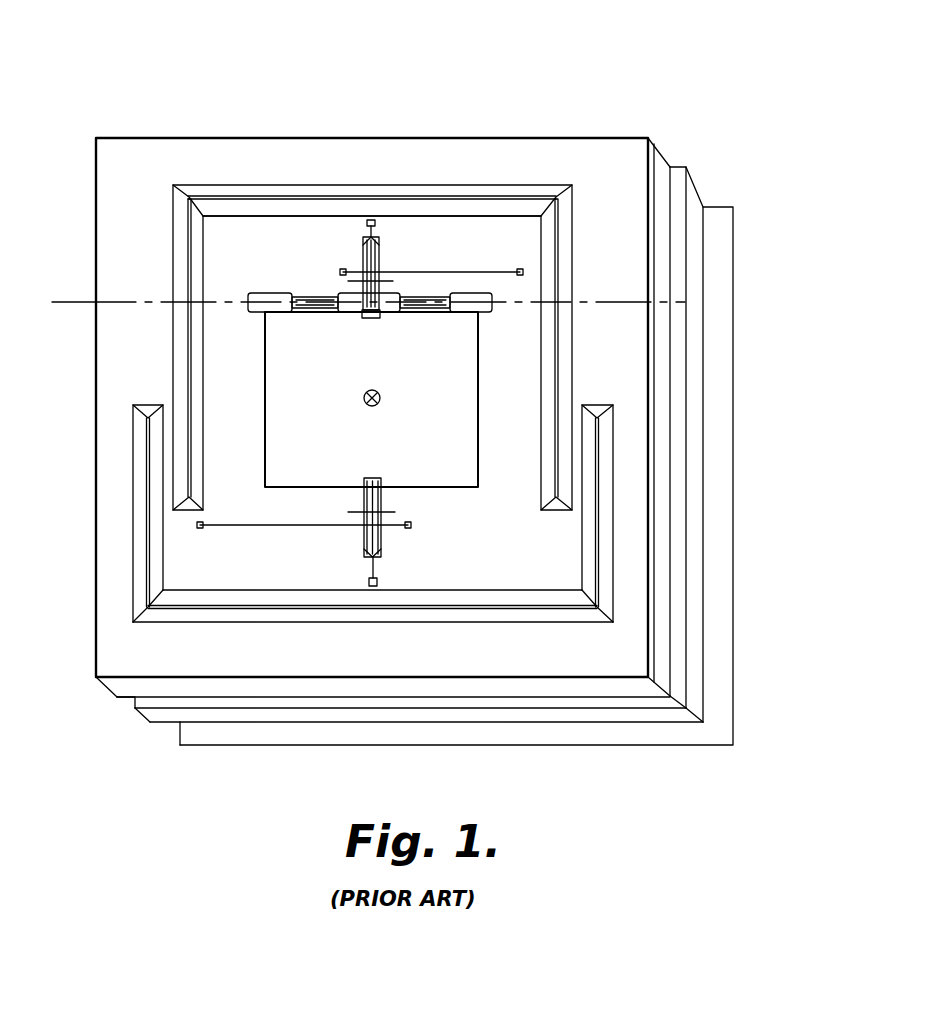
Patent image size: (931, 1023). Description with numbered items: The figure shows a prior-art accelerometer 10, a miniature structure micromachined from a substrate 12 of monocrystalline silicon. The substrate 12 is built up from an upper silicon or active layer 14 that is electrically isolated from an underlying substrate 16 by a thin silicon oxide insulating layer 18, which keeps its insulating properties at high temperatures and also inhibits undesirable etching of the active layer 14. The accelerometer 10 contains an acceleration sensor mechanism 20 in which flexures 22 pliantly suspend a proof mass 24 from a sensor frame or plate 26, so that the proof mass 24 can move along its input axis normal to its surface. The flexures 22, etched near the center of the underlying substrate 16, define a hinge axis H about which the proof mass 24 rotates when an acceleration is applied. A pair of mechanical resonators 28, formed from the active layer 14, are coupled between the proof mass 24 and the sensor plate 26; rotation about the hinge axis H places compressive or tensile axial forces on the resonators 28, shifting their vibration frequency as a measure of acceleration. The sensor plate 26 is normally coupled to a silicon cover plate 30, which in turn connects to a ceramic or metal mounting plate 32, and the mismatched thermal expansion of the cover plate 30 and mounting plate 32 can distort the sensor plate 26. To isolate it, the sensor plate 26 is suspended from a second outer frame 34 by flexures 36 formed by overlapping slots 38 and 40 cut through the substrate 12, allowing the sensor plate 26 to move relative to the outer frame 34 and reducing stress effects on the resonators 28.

The accelerometer 10 is at (645, 65).
The substrate 12 is at (548, 138).
The active layer 14 is at (648, 136).
The underlying substrate 16 is at (667, 150).
The insulating layer 18 is at (653, 136).
The acceleration sensor mechanism 20 is at (190, 563).
The flexures 22 is at (304, 293).
The proof mass 24 is at (253, 434).
The sensor plate 26 is at (437, 215).
The mechanical resonators 28 is at (350, 249).
The silicon cover plate 30 is at (697, 173).
The mounting plate 32 is at (722, 207).
The outer frame 34 is at (96, 404).
The flexures 36 is at (170, 478).
The slot 38 is at (232, 196).
The slot 40 is at (203, 612).
The hinge axis H is at (65, 301).